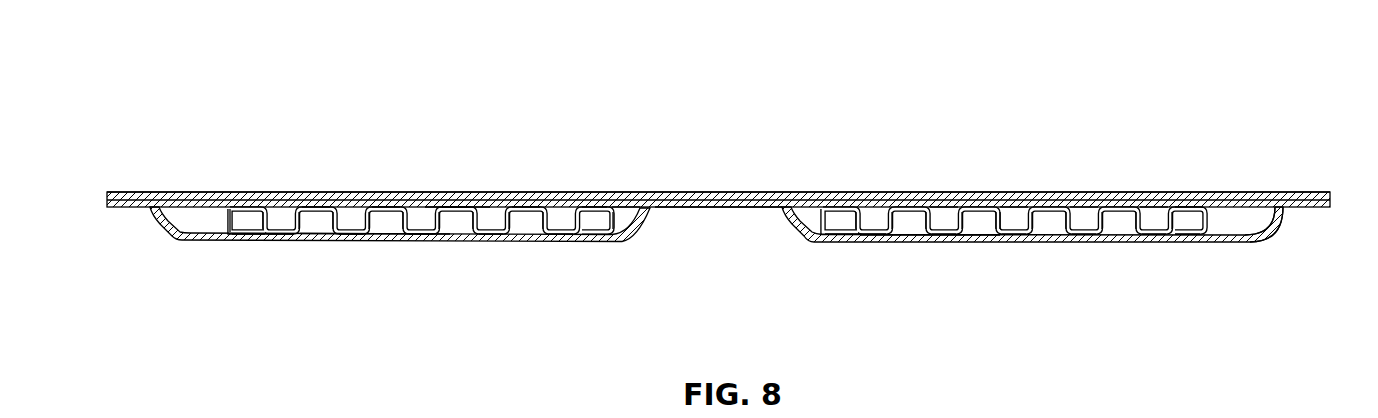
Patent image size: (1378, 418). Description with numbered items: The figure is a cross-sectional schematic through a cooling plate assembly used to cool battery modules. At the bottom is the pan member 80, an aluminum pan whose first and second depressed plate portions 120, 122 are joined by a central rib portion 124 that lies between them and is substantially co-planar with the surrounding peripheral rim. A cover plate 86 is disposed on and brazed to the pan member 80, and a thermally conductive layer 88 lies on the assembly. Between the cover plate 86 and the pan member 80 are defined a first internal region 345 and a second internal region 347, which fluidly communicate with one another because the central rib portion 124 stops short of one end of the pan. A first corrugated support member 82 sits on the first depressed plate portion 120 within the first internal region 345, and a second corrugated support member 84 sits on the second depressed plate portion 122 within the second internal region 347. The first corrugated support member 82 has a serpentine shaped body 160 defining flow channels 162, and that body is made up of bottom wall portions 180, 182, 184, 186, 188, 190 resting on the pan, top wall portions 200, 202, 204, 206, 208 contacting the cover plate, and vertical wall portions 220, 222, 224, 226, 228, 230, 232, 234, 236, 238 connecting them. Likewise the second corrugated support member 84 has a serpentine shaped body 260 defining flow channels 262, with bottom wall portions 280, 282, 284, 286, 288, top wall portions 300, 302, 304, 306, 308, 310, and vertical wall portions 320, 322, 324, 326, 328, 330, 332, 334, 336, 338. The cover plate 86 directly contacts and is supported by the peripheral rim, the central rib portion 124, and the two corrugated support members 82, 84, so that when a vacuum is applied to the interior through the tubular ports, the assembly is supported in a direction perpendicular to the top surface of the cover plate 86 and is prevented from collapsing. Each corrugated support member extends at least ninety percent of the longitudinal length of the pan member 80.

The pan member 80 is at (152, 211).
The first corrugated support member 82 is at (920, 236).
The second corrugated support member 84 is at (372, 234).
The cover plate 86 is at (1272, 226).
The thermally conductive layer 88 is at (1328, 191).
The first depressed plate portion 120 is at (1226, 241).
The second depressed plate portion 122 is at (190, 243).
The central rib portion 124 is at (688, 208).
The serpentine shaped body 160 is at (1197, 206).
The flow channels 162 is at (1043, 206).
The bottom wall portion 180 is at (835, 242).
The bottom wall portion 182 is at (885, 237).
The bottom wall portion 184 is at (975, 237).
The bottom wall portion 186 is at (1030, 237).
The bottom wall portion 188 is at (1110, 237).
The bottom wall portion 190 is at (1188, 237).
The top wall portion 200 is at (847, 206).
The top wall portion 202 is at (951, 206).
The top wall portion 204 is at (1006, 206).
The top wall portion 206 is at (1088, 206).
The top wall portion 208 is at (1143, 206).
The vertical wall portion 220 is at (861, 206).
The vertical wall portion 222 is at (900, 206).
The vertical wall portion 224 is at (931, 206).
The vertical wall portion 226 is at (976, 206).
The vertical wall portion 228 is at (991, 206).
The vertical wall portion 230 is at (1020, 237).
The vertical wall portion 232 is at (1060, 237).
The vertical wall portion 234 is at (1080, 237).
The vertical wall portion 236 is at (1140, 237).
The vertical wall portion 238 is at (1160, 237).
The serpentine shaped body 260 is at (632, 206).
The flow channels 262 is at (490, 206).
The bottom wall portion 280 is at (240, 237).
The bottom wall portion 282 is at (350, 235).
The bottom wall portion 284 is at (421, 235).
The bottom wall portion 286 is at (496, 236).
The bottom wall portion 288 is at (570, 236).
The top wall portion 300 is at (250, 206).
The top wall portion 302 is at (313, 206).
The top wall portion 304 is at (386, 206).
The top wall portion 306 is at (455, 206).
The top wall portion 308 is at (531, 206).
The top wall portion 310 is at (596, 206).
The vertical wall portion 320 is at (262, 206).
The vertical wall portion 322 is at (284, 206).
The vertical wall portion 324 is at (341, 206).
The vertical wall portion 326 is at (353, 206).
The vertical wall portion 328 is at (421, 206).
The vertical wall portion 330 is at (450, 236).
The vertical wall portion 332 is at (463, 236).
The vertical wall portion 334 is at (527, 236).
The vertical wall portion 336 is at (540, 236).
The vertical wall portion 338 is at (618, 237).
The first internal region 345 is at (1266, 246).
The second internal region 347 is at (207, 216).